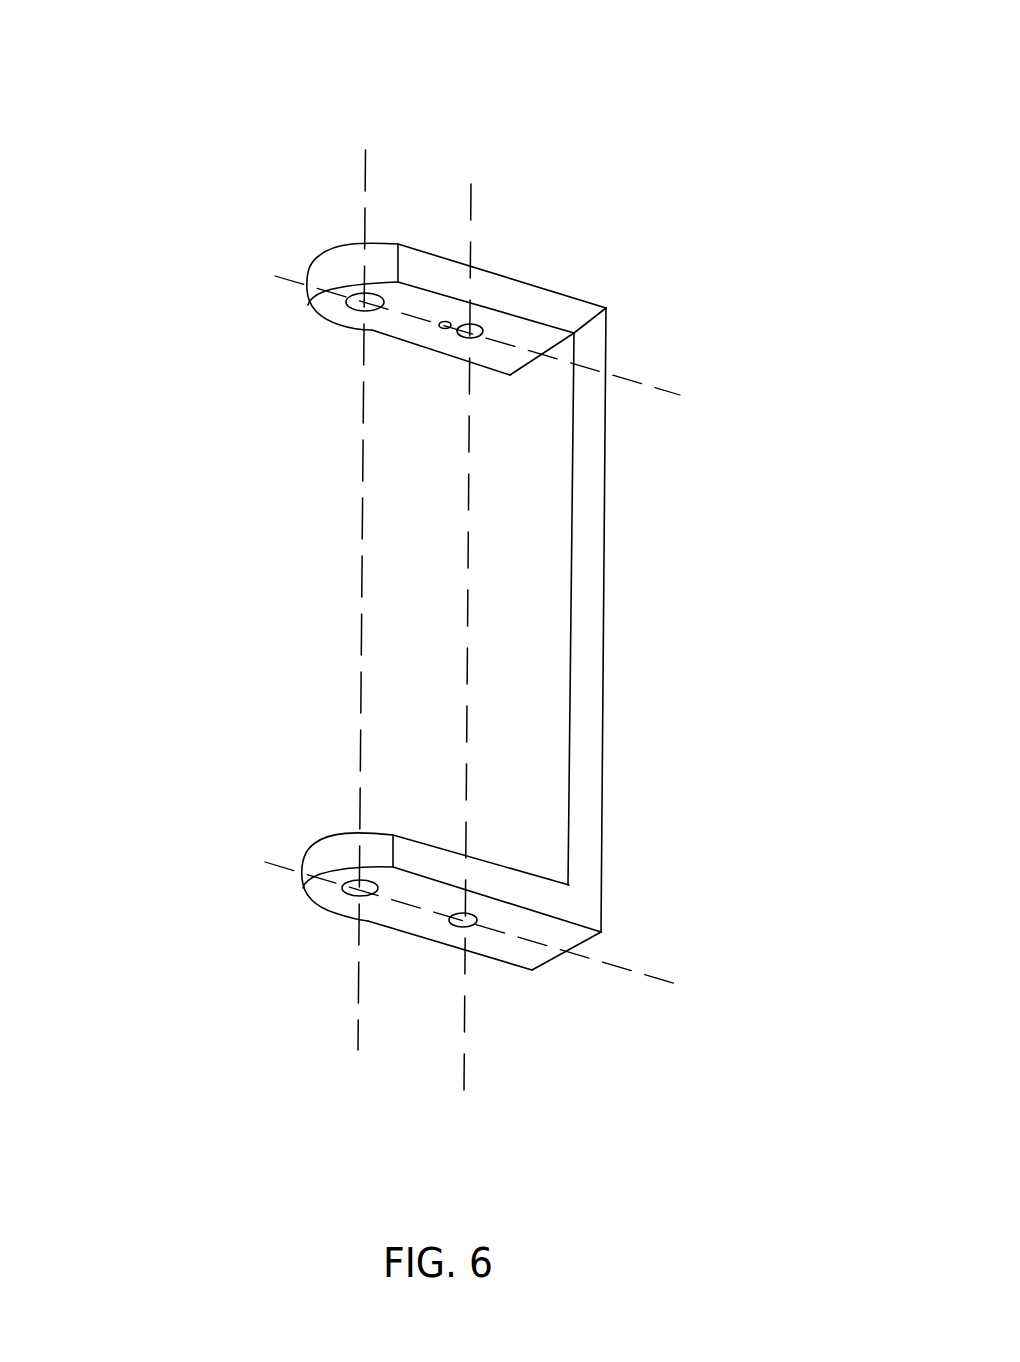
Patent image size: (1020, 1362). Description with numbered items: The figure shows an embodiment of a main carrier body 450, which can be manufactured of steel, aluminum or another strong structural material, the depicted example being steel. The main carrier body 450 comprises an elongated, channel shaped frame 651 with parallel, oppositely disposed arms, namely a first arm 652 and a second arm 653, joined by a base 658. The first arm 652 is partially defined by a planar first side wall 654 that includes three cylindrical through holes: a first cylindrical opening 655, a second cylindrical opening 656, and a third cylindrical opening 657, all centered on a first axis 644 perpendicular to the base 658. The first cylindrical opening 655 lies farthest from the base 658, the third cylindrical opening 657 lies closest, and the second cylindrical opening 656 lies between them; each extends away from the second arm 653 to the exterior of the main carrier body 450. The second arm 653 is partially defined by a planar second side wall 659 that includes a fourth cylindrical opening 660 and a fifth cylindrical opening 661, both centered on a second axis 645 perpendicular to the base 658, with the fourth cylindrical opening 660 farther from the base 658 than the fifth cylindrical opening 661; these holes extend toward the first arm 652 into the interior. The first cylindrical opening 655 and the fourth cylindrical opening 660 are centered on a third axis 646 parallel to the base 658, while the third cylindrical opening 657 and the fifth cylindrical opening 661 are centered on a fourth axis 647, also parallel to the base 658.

The main carrier body 450 is at (782, 773).
The first axis 644 is at (276, 268).
The second axis 645 is at (277, 863).
The third axis 646 is at (358, 1028).
The fourth axis 647 is at (465, 1025).
The channel shaped frame 651 is at (597, 718).
The first arm 652 is at (337, 247).
The second arm 653 is at (318, 837).
The planar first side wall 654 is at (403, 339).
The first cylindrical opening 655 is at (348, 309).
The second cylindrical opening 656 is at (445, 322).
The third cylindrical opening 657 is at (483, 330).
The base 658 is at (547, 610).
The planar second side wall 659 is at (601, 932).
The fourth cylindrical opening 660 is at (472, 927).
The fifth cylindrical opening 661 is at (347, 895).